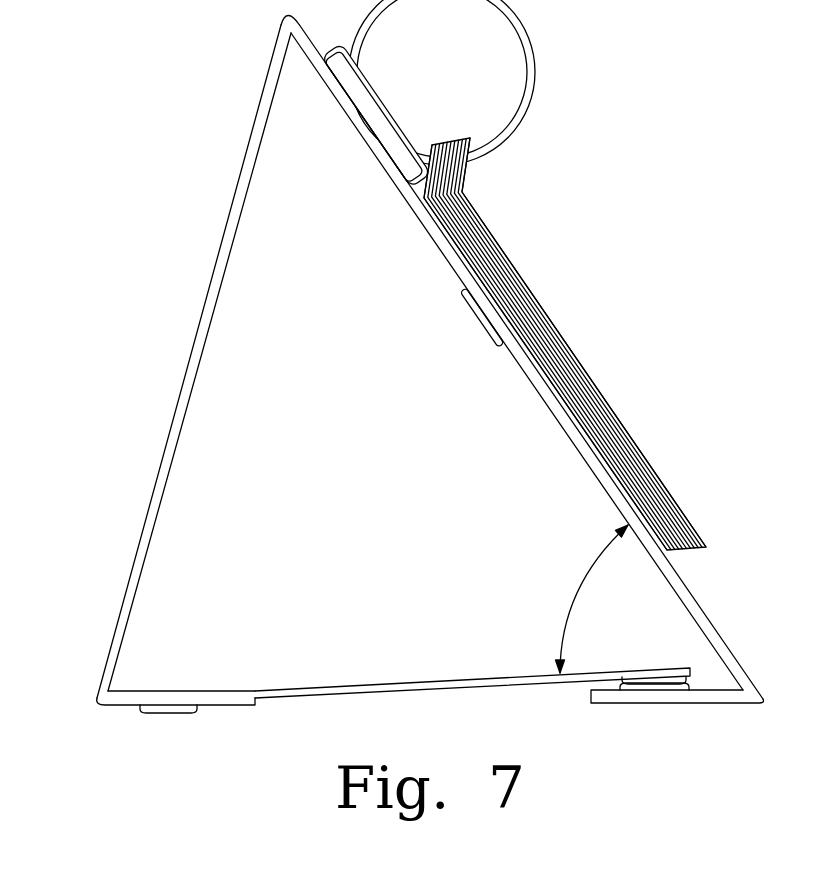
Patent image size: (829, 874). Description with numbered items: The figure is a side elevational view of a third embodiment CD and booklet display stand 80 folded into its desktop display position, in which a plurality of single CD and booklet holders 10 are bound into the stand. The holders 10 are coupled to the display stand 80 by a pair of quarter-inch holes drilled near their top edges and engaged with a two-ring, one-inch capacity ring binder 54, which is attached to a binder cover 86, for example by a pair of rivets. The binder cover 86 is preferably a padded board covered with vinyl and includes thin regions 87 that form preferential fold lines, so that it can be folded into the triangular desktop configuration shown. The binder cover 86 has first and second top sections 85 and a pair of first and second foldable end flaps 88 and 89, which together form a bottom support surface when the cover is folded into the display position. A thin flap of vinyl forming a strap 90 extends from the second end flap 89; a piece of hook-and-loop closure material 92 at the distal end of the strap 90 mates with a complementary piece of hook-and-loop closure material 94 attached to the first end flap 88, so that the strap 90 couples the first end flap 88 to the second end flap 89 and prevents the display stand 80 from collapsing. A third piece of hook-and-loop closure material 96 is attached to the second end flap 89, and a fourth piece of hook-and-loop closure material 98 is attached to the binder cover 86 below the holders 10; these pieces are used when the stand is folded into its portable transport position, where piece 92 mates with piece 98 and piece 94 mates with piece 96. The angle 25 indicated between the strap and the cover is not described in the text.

The single CD and booklet holder 10 is at (653, 470).
The angle between strip and support 25 is at (577, 593).
The ring binder 54 is at (533, 62).
The display stand 80 is at (394, 445).
The top sections 85 is at (212, 325).
The binder cover 86 is at (163, 448).
The thin regions 87 is at (300, 72).
The first end flap 88 is at (712, 702).
The second end flap 89 is at (253, 705).
The strap 90 is at (337, 687).
The hook-and-loop closure material 92 is at (647, 676).
The complementary hook-and-loop closure material 94 is at (650, 686).
The third hook-and-loop closure material 96 is at (160, 713).
The fourth hook-and-loop closure material 98 is at (468, 305).